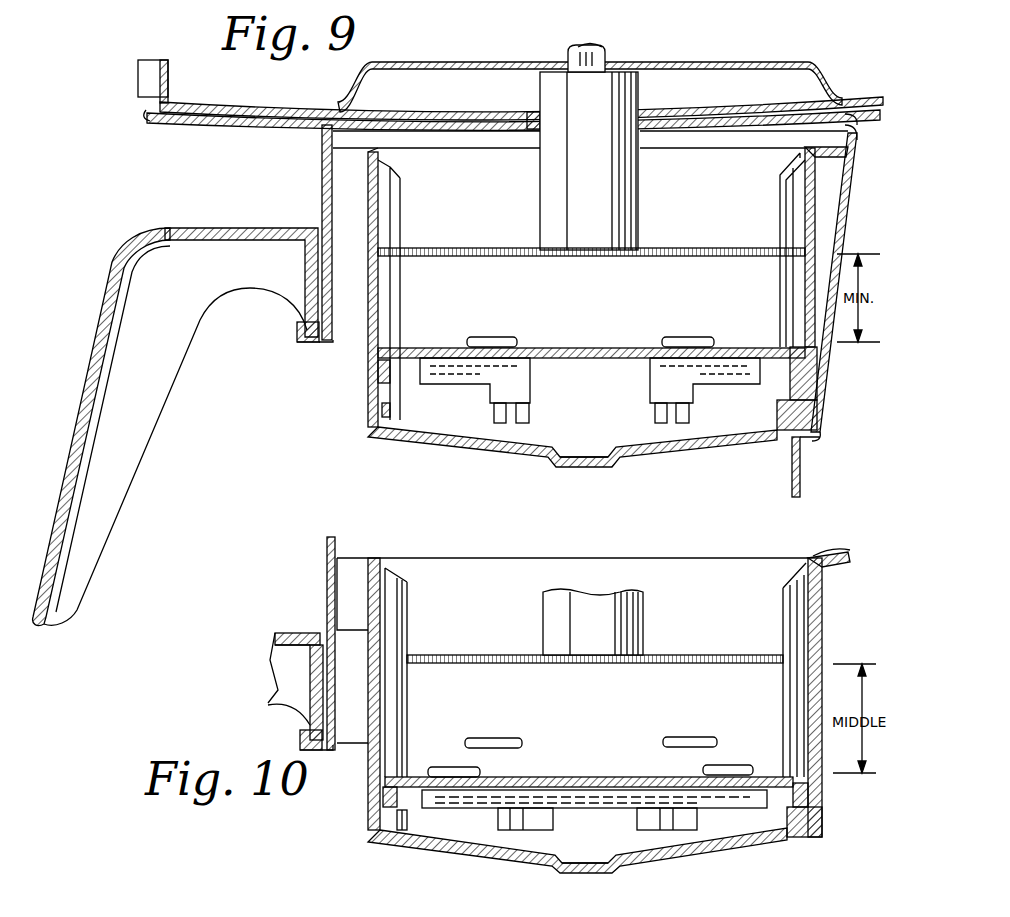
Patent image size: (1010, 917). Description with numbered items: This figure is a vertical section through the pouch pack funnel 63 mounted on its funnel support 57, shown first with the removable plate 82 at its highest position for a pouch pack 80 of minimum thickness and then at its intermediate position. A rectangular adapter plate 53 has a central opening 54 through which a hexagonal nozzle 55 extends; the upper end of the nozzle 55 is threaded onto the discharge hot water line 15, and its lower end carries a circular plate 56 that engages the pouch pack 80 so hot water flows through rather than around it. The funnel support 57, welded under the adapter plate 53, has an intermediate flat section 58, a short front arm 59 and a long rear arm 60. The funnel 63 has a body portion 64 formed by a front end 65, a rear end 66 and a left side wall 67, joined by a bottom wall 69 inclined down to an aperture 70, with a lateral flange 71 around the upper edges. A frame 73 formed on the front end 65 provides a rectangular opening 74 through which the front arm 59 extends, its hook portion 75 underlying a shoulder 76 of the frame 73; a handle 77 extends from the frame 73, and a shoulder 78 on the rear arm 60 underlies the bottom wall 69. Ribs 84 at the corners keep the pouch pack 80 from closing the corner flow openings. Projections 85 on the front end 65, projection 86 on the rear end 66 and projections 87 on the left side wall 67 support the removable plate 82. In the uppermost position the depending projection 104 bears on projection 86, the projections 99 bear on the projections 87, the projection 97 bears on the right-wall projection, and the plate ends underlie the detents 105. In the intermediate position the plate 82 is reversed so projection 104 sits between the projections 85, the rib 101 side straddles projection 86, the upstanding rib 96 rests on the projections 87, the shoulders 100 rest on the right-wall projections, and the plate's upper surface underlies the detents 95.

In FIG. 9, the discharge hot water line 15 is at (607, 46).
In FIG. 9, the adapter plate 53 is at (689, 110).
In FIG. 9, the central opening 54 is at (536, 130).
In FIG. 9, the hexagonal nozzle 55 is at (627, 174).
In FIG. 10, the hexagonal nozzle 55 is at (630, 602).
In FIG. 9, the circular plate 56 is at (650, 247).
In FIG. 10, the circular plate 56 is at (673, 655).
In FIG. 9, the funnel support 57 is at (864, 179).
In FIG. 9, the intermediate flat section 58 is at (732, 129).
In FIG. 9, the front arm 59 is at (322, 180).
In FIG. 10, the front arm 59 is at (568, 643).
In FIG. 9, the rear arm 60 is at (850, 214).
In FIG. 9, the pouch pack funnel 63 is at (335, 452).
In FIG. 9, the body portion 64 is at (352, 353).
In FIG. 9, the front end 65 is at (378, 231).
In FIG. 10, the front end 65 is at (380, 611).
In FIG. 9, the rear end 66 is at (807, 203).
In FIG. 10, the rear end 66 is at (823, 616).
In FIG. 9, the left side wall 67 is at (476, 228).
In FIG. 10, the left side wall 67 is at (720, 603).
In FIG. 9, the bottom wall 69 is at (660, 458).
In FIG. 10, the bottom wall 69 is at (667, 861).
In FIG. 9, the aperture 70 is at (597, 460).
In FIG. 10, the aperture 70 is at (600, 866).
In FIG. 9, the lateral flange 71 is at (836, 134).
In FIG. 10, the lateral flange 71 is at (843, 567).
In FIG. 9, the frame 73 is at (312, 270).
In FIG. 10, the frame 73 is at (313, 673).
In FIG. 9, the rectangular opening 74 is at (345, 233).
In FIG. 10, the rectangular opening 74 is at (357, 735).
In FIG. 9, the hook portion 75 is at (300, 341).
In FIG. 10, the hook portion 75 is at (316, 755).
In FIG. 9, the shoulder 76 is at (307, 330).
In FIG. 10, the shoulder 76 is at (312, 732).
In FIG. 9, the handle 77 is at (133, 467).
In FIG. 9, the shoulder 78 is at (812, 441).
In FIG. 9, the pouch pack 80 is at (693, 275).
In FIG. 10, the pouch pack 80 is at (490, 690).
In FIG. 9, the removable plate 82 is at (578, 358).
In FIG. 10, the removable plate 82 is at (593, 777).
In FIG. 9, the ribs 84 is at (787, 172).
In FIG. 10, the ribs 84 is at (400, 640).
In FIG. 9, the upstanding projections 85 is at (389, 422).
In FIG. 10, the upstanding projections 85 is at (413, 848).
In FIG. 9, the upstanding projection 86 is at (812, 410).
In FIG. 10, the upstanding projection 86 is at (803, 817).
In FIG. 9, the upstanding projections 87 is at (503, 418).
In FIG. 10, the upstanding projections 87 is at (507, 824).
In FIG. 10, the detents 95 is at (443, 765).
In FIG. 10, the upstanding rib 96 is at (733, 798).
In FIG. 10, the upstanding projection 97 is at (573, 821).
In FIG. 9, the spaced projections 99 is at (660, 384).
In FIG. 9, the shoulders 100 is at (457, 378).
In FIG. 9, the rib 101 is at (383, 370).
In FIG. 10, the rib 101 is at (813, 794).
In FIG. 9, the depending projection 104 is at (793, 376).
In FIG. 10, the depending projection 104 is at (370, 828).
In FIG. 9, the detents 105 is at (493, 336).
In FIG. 10, the detents 105 is at (513, 738).